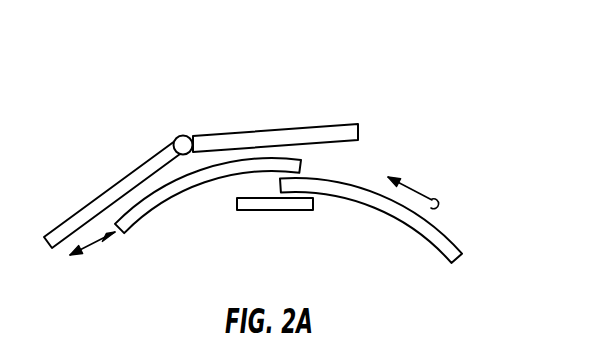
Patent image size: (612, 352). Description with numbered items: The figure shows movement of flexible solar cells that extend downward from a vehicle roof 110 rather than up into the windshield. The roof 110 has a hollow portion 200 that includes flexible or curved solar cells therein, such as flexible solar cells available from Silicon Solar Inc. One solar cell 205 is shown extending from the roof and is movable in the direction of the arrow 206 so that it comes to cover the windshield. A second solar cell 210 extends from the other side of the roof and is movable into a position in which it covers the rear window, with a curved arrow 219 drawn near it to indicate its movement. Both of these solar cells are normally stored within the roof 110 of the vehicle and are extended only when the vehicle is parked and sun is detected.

The roof 110 is at (343, 123).
The hollow portion 200 is at (275, 211).
The solar cell 205 is at (156, 208).
The arrow 206 is at (93, 245).
The solar cell 210 is at (447, 232).
The direction of rotation 219 is at (412, 182).